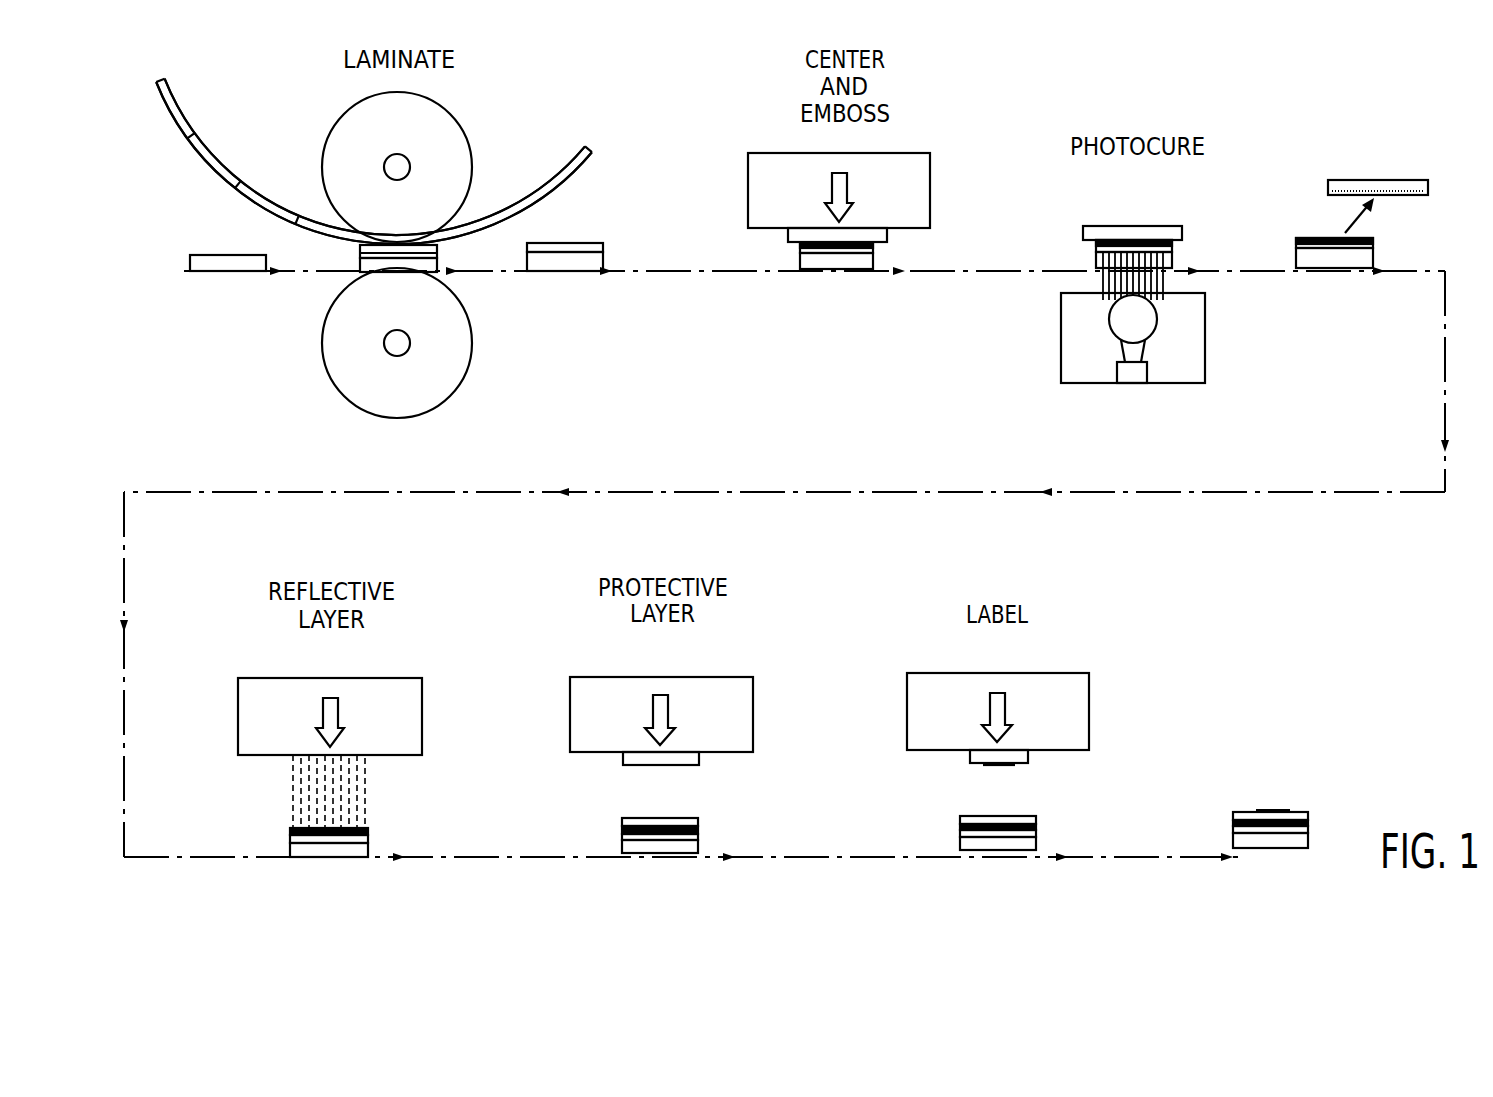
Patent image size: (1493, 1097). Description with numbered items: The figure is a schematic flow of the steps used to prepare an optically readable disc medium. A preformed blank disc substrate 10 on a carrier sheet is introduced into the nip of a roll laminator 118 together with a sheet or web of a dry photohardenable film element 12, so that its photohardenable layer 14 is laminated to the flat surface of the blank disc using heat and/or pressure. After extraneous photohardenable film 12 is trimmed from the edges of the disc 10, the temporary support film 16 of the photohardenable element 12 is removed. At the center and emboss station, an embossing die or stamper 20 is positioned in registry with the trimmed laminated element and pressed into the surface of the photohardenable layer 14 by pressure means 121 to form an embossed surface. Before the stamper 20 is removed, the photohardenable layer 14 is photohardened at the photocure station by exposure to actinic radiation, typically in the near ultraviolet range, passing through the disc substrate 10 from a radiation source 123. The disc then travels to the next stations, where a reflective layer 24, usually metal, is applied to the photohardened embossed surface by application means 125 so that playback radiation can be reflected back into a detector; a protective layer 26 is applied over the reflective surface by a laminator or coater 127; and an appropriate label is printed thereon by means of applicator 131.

The blank disc substrate 10 is at (188, 254).
The photohardenable film element 12 is at (197, 128).
The photohardenable layer 14 is at (216, 156).
The temporary support film 16 is at (246, 184).
The embossing die or stamper 20 is at (789, 236).
The reflective layer 24 is at (368, 830).
The protective layer 26 is at (662, 818).
The roll laminator 118 is at (455, 113).
The pressure means 121 is at (796, 148).
The radiation source 123 is at (1055, 345).
The application means 125 is at (358, 672).
The laminator or coater 127 is at (690, 670).
The applicator 131 is at (1015, 667).